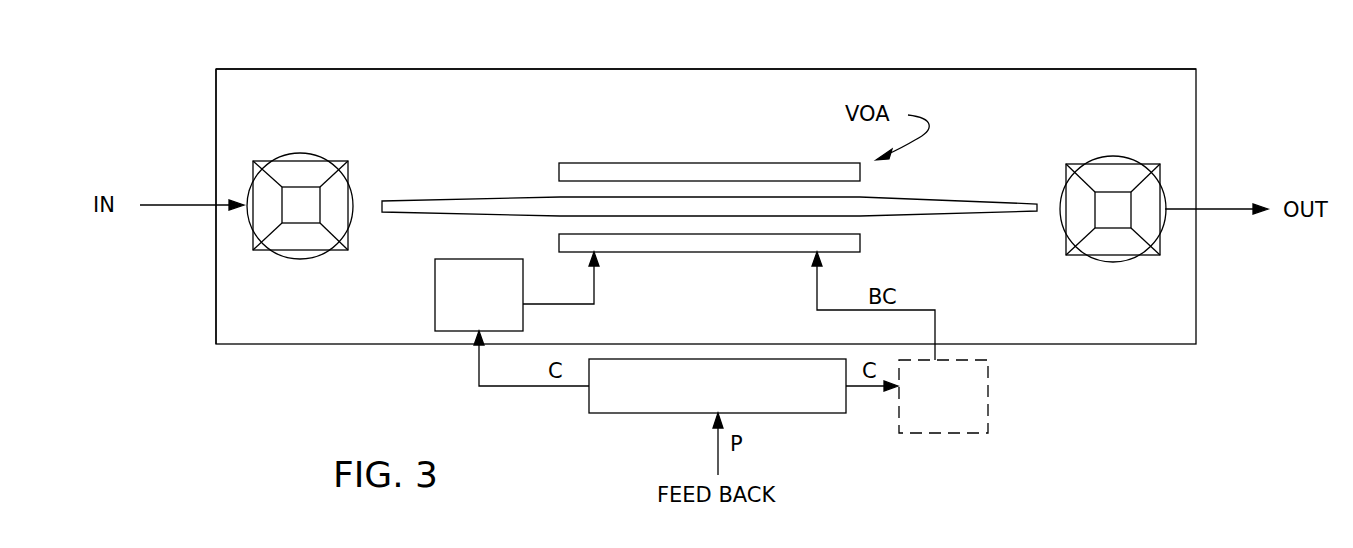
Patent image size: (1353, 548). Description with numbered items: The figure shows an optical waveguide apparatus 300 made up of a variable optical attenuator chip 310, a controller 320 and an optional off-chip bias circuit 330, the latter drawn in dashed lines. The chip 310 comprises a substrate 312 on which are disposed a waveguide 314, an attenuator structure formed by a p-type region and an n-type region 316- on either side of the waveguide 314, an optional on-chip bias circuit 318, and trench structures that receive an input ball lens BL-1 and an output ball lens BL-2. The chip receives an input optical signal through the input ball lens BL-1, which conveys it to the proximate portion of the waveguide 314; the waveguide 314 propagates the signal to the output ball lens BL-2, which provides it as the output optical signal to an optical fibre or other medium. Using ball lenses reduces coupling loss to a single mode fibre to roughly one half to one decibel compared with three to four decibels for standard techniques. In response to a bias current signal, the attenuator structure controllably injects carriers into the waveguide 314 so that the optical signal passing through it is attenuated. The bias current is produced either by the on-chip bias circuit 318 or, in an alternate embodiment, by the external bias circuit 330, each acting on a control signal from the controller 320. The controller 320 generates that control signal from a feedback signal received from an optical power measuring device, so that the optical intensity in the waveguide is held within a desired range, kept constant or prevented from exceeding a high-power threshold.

The optical waveguide apparatus 300 is at (184, 357).
The VOA chip 310 is at (870, 69).
The substrate 312 is at (478, 122).
The waveguide 314 is at (915, 217).
The n-type region 316- is at (671, 252).
The on-chip bias circuit 318 is at (523, 318).
The VOA controller 320 is at (610, 413).
The off-chip bias circuit 330 is at (955, 433).
The input ball lens BL-1 is at (263, 250).
The output ball lens BL-2 is at (1078, 255).